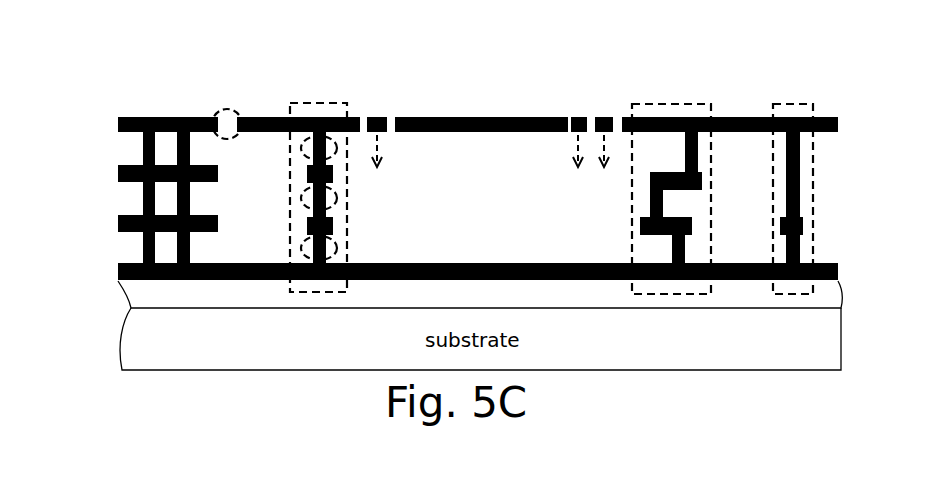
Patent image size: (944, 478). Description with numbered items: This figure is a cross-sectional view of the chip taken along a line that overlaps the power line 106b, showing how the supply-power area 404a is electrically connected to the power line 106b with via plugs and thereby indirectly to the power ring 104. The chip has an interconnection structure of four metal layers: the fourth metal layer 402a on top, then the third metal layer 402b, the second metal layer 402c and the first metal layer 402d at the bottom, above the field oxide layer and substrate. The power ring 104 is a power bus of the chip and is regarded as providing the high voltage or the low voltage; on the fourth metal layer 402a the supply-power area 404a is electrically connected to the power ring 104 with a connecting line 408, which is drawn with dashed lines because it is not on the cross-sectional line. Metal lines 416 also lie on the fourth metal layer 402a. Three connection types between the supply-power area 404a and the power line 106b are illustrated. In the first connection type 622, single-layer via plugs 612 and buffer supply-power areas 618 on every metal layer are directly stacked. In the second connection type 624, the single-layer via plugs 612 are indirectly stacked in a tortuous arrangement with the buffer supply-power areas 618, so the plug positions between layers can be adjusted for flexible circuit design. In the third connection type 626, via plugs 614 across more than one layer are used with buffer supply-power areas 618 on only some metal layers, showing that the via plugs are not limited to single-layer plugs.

The power ring 104 is at (207, 104).
The power line 106b is at (838, 268).
The fourth metal layer 402a is at (117, 124).
The third metal layer 402b is at (117, 173).
The second metal layer 402c is at (117, 222).
The first metal layer 402d is at (117, 271).
The supply-power area 404a is at (353, 115).
The connecting line 408 is at (236, 113).
The metal lines 416 is at (384, 135).
The single-layer via plugs 612 is at (308, 150).
The via plugs across more than one layer 614 is at (801, 175).
The buffer supply-power areas 618 is at (334, 173).
The first connection type 622 is at (303, 105).
The second connection type 624 is at (659, 105).
The third connection type 626 is at (791, 105).